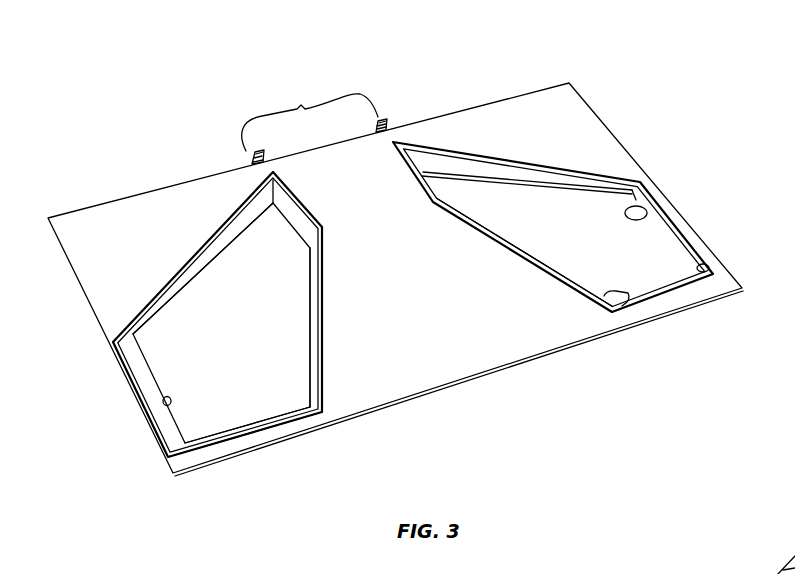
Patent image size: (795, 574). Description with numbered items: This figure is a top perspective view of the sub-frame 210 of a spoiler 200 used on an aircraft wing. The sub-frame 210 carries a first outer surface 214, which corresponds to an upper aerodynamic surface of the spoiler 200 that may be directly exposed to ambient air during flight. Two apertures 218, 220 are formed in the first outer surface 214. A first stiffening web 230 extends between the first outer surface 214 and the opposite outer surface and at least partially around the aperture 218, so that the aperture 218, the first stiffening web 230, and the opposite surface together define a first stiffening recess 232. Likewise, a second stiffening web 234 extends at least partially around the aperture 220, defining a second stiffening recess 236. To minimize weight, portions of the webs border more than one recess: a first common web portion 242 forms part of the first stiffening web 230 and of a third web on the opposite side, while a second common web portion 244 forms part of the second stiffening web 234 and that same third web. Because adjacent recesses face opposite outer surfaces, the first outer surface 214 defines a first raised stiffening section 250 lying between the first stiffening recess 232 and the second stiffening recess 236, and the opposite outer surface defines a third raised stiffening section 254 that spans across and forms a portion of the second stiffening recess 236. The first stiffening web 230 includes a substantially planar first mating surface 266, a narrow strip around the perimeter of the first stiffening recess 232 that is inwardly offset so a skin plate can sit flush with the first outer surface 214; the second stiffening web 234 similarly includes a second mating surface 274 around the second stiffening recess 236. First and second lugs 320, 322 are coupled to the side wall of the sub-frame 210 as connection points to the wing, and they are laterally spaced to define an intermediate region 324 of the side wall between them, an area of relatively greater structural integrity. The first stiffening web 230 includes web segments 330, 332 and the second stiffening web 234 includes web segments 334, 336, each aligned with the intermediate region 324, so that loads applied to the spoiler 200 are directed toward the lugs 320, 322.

The spoiler 200 is at (160, 490).
The sub-frame 210 is at (495, 110).
The first outer surface 214 is at (511, 341).
The aperture 218 is at (165, 412).
The aperture 220 is at (645, 297).
The first stiffening web 230 is at (186, 288).
The first stiffening recess 232 is at (219, 418).
The second stiffening web 234 is at (642, 209).
The second stiffening recess 236 is at (650, 271).
The first common web portion 242 is at (321, 348).
The second common web portion 244 is at (632, 324).
The first raised stiffening section 250 is at (400, 333).
The third raised stiffening section 254 is at (794, 540).
The first mating surface 266 is at (265, 420).
The second mating surface 274 is at (656, 183).
The first lug 320 is at (251, 160).
The second lug 322 is at (389, 119).
The intermediate region 324 is at (310, 117).
The web segment 330 is at (229, 246).
The web segment 332 is at (306, 300).
The web segment 334 is at (540, 254).
The web segment 336 is at (535, 178).